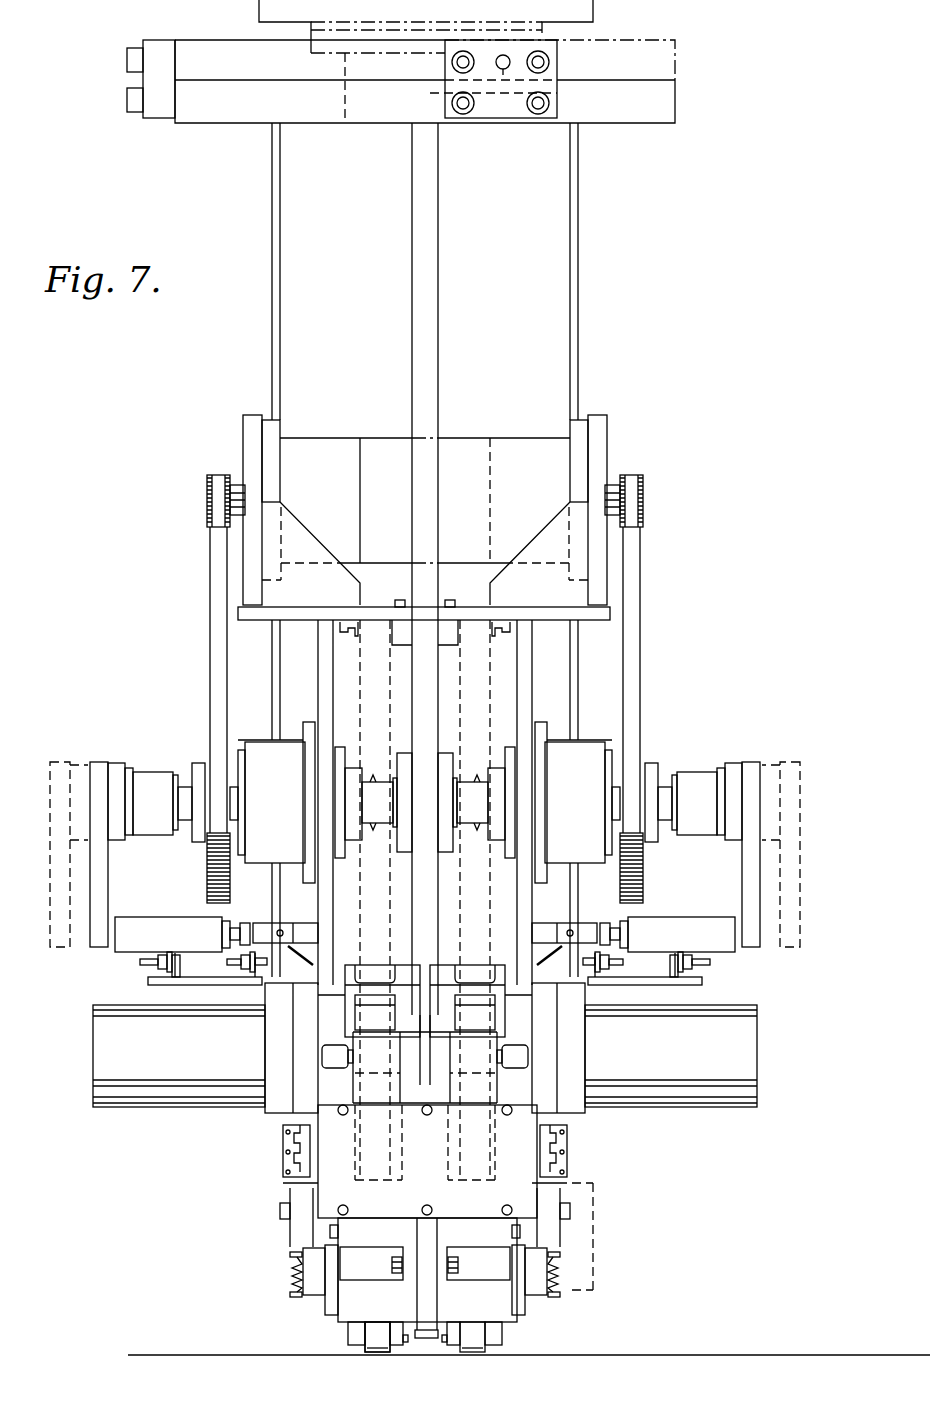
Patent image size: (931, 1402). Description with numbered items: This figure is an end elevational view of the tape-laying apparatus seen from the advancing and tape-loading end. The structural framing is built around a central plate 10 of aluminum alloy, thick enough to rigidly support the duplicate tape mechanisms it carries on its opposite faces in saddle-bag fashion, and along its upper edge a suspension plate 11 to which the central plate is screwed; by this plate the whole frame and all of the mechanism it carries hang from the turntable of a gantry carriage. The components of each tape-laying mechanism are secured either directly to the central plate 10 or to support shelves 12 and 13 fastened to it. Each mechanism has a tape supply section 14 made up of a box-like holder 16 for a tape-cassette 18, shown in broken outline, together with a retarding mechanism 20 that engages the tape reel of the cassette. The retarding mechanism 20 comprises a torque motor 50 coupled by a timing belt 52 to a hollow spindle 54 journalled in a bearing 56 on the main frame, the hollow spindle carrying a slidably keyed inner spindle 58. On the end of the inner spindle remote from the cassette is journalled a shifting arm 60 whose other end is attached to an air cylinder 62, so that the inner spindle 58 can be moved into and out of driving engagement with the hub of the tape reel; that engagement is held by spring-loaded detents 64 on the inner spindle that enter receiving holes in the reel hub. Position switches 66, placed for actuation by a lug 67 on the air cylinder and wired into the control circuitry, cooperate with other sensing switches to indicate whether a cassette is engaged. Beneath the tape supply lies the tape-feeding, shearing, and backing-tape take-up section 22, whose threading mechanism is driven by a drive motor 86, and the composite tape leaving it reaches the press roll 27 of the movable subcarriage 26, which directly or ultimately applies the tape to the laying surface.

The central plate 10 is at (438, 192).
The suspension plate 11 is at (605, 117).
The support shelf 12 is at (293, 608).
The support shelf 13 is at (288, 985).
The tape supply section 14 is at (170, 584).
The box-like holder 16 is at (322, 648).
The tape-cassette 18 is at (372, 692).
The retarding mechanism 20 is at (143, 719).
The tape-feeding, shearing, and backing-tape take-up section 22 is at (270, 1158).
The movable subcarriage 26 is at (270, 1278).
The press roll 27 is at (381, 1333).
The torque motor 50 is at (331, 445).
The timing belt 52 is at (215, 544).
The hollow spindle 54 is at (197, 775).
The bearing 56 is at (282, 816).
The inner spindle 58 is at (386, 814).
The shifting arm 60 is at (103, 871).
The air cylinder 62 is at (182, 948).
The spring-loaded detents 64 is at (372, 828).
The position switches 66 is at (222, 983).
The lug 67 is at (222, 963).
The drive motor 86 is at (200, 1068).